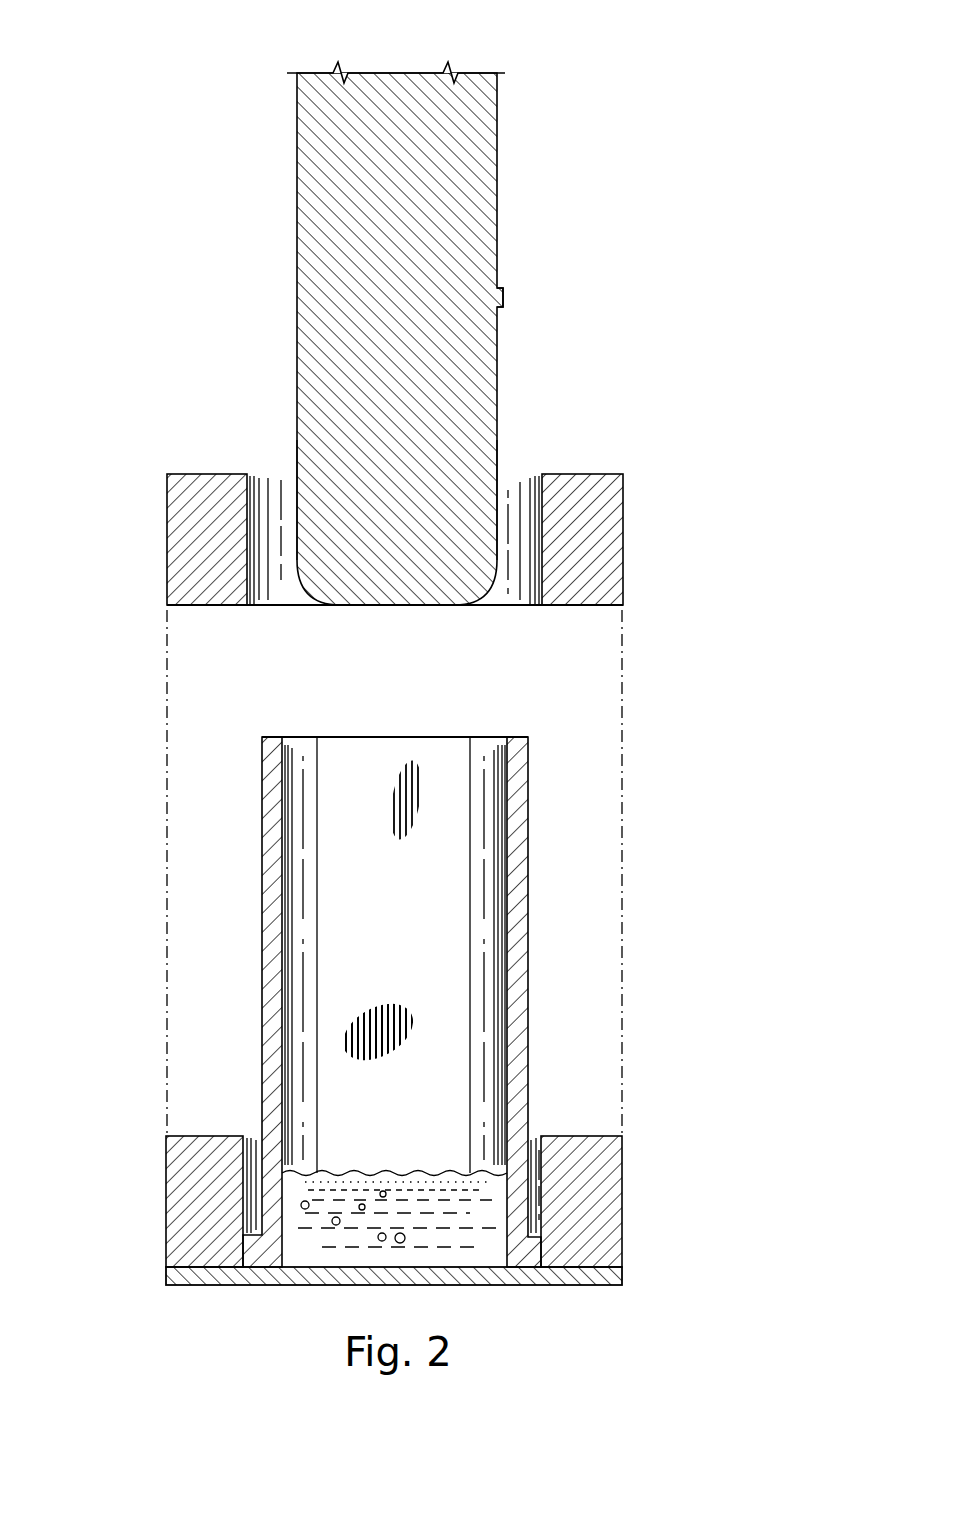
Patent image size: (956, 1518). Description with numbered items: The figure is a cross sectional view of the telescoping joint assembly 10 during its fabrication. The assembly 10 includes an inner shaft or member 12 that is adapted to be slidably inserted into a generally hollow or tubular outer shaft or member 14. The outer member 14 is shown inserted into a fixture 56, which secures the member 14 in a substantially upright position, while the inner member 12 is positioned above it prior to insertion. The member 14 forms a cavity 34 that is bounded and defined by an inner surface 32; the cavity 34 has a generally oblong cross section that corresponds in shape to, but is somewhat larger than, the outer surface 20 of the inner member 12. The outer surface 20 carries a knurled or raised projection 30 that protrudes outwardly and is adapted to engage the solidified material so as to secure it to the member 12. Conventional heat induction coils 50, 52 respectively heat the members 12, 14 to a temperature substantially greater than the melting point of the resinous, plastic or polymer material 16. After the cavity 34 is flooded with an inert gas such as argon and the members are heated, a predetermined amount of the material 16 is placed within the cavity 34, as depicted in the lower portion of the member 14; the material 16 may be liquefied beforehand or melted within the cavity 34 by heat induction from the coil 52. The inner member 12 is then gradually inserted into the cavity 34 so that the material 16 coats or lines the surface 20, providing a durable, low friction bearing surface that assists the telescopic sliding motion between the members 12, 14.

The telescoping joint assembly 10 is at (556, 108).
The inner shaft or member 12 is at (498, 237).
The outer shaft or member 14 is at (262, 990).
The resinous, plastic or polymer material 16 is at (441, 1225).
The outer surface 20 is at (498, 428).
The knurled or raised projection 30 is at (505, 292).
The inner surface 32 is at (284, 757).
The cavity 34 is at (381, 910).
The heat induction coil 50 is at (175, 512).
The heat induction coil 52 is at (172, 1213).
The fixture 56 is at (578, 1286).